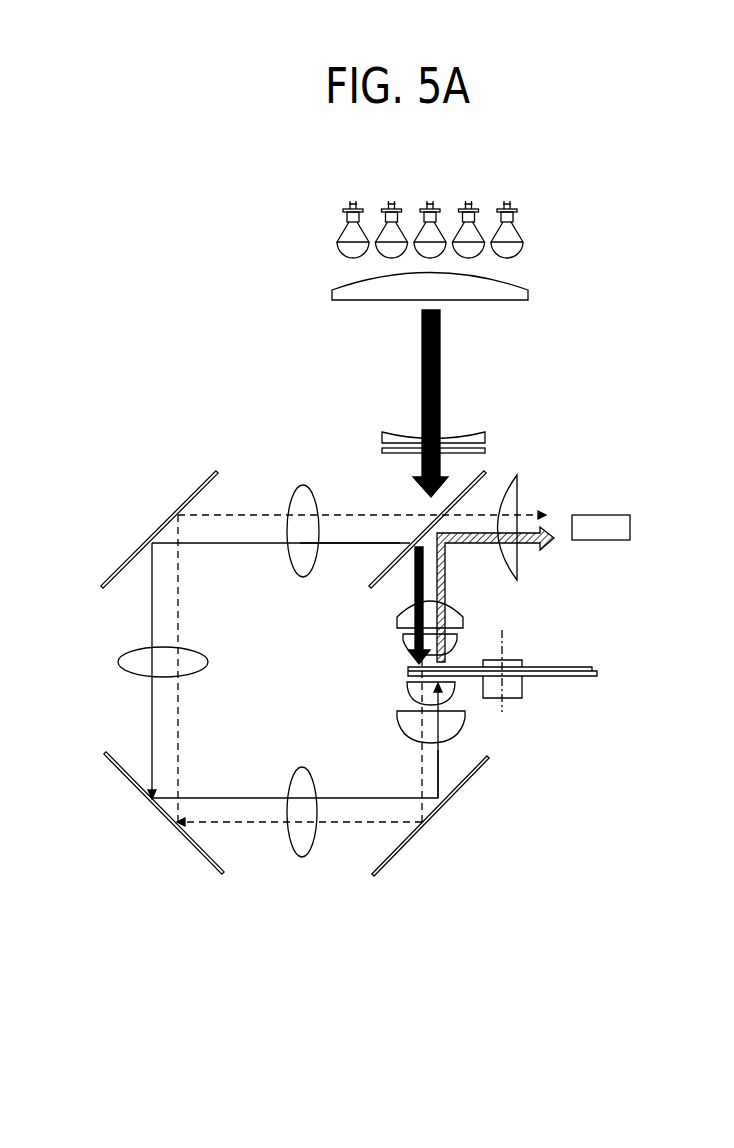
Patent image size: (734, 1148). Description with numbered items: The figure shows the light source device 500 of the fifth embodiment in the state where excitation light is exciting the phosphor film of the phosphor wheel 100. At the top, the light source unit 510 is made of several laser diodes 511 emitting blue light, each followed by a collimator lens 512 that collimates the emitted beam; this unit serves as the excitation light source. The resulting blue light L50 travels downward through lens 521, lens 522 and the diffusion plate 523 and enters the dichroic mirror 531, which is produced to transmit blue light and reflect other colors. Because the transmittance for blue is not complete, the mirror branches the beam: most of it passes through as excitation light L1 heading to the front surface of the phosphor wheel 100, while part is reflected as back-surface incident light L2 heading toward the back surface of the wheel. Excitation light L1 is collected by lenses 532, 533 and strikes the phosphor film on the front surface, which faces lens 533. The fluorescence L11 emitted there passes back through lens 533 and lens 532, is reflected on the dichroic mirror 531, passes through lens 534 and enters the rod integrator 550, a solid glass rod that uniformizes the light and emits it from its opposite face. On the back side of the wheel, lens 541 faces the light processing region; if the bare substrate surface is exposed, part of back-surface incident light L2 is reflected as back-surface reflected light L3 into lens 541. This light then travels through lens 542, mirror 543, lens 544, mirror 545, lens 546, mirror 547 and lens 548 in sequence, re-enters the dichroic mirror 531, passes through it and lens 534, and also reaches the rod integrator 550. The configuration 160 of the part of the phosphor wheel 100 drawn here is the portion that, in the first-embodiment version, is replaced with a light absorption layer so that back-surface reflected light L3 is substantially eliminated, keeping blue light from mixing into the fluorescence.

The light source device 500 is at (603, 240).
The light source unit 510 is at (527, 190).
The laser diode 511 is at (350, 212).
The collimator lens 512 is at (348, 248).
The lens 521 is at (530, 293).
The lens 522 is at (485, 437).
The diffusion plate 523 is at (485, 451).
The dichroic mirror 531 is at (490, 470).
The lens 532 is at (397, 620).
The lens 533 is at (403, 648).
The lens 534 is at (518, 563).
The lens 541 is at (407, 688).
The lens 542 is at (403, 715).
The mirror 543 is at (488, 757).
The lens 544 is at (302, 845).
The mirror 545 is at (162, 810).
The lens 546 is at (187, 658).
The mirror 547 is at (202, 480).
The lens 548 is at (303, 497).
The rod integrator 550 is at (615, 523).
The phosphor wheel 100 is at (600, 665).
The configuration 160 is at (460, 647).
The blue light L50 is at (408, 403).
The excitation light L1 is at (400, 592).
The back-surface incident light L2 is at (353, 543).
The back-surface reflected light L3 is at (420, 752).
The fluorescence L11 is at (547, 541).